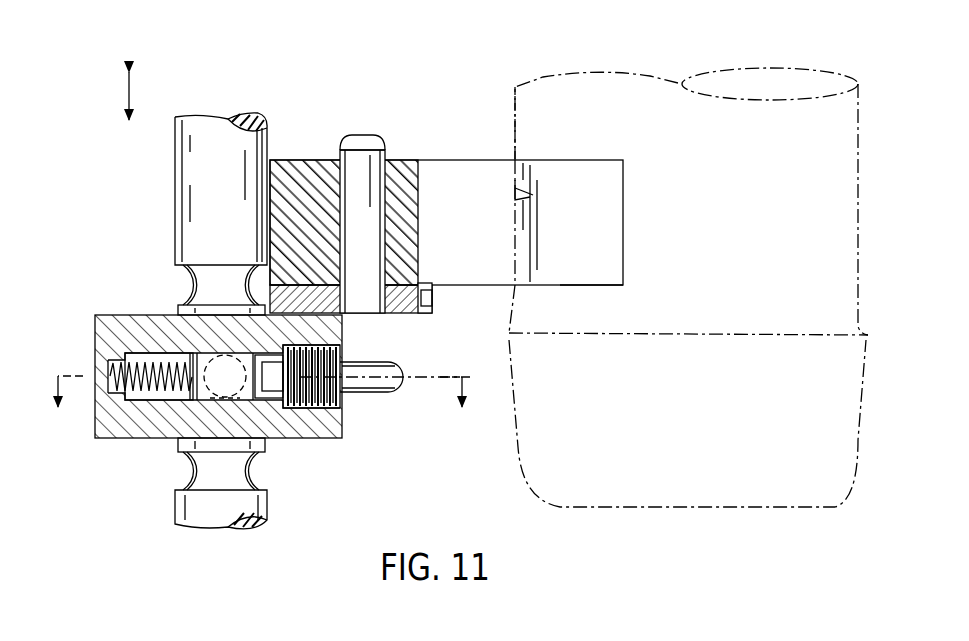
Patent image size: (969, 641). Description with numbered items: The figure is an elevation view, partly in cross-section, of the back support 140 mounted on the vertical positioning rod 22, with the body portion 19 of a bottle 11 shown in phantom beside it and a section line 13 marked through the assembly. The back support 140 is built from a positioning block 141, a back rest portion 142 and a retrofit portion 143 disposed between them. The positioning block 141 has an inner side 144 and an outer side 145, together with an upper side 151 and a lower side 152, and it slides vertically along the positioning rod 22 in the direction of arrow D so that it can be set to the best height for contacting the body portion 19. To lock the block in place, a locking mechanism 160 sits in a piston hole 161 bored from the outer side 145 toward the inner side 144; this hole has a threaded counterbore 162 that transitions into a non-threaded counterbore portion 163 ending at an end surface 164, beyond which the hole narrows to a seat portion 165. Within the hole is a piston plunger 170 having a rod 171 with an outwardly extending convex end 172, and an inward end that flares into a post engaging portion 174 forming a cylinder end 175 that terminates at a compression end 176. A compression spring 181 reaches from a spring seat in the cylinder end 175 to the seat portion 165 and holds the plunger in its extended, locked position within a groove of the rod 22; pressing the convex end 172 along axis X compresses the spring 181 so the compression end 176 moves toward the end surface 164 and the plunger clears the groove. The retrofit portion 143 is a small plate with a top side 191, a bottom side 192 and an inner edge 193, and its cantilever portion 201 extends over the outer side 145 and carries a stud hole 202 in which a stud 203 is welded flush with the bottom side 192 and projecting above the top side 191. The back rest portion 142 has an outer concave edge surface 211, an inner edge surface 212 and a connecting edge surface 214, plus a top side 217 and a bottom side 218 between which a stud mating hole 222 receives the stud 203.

The bottle 11 is at (645, 76).
The bottom ledge plate 13 is at (261, 415).
The body portion 19 is at (857, 168).
The vertical positioning rod 22 is at (172, 220).
The arrow D is at (123, 92).
The axis X is at (398, 392).
The back support 140 is at (130, 195).
The positioning block 141 is at (125, 446).
The back rest portion 142 is at (437, 158).
The retrofit portion 143 is at (432, 305).
The inner side 144 is at (112, 358).
The outer side 145 is at (343, 430).
The upper side 151 is at (115, 328).
The lower side 152 is at (143, 440).
The locking mechanism 160 is at (362, 363).
The piston hole 161 is at (133, 403).
The threaded counterbore 162 is at (312, 412).
The counterbore portion 163 is at (259, 402).
The end surface 164 is at (187, 363).
The seat portion 165 is at (110, 370).
The piston plunger 170 is at (386, 398).
The rod 171 is at (353, 392).
The convex end 172 is at (402, 374).
The post engaging portion 174 is at (213, 350).
The cylinder end 175 is at (228, 402).
The compression end 176 is at (187, 320).
The compression spring 181 is at (163, 395).
The top side 191 is at (416, 214).
The bottom side 192 is at (410, 316).
The inner edge 193 is at (248, 250).
The cantilever portion 201 is at (417, 282).
The stud hole 202 is at (347, 272).
The stud 203 is at (358, 145).
The outer concave edge surface 211 is at (533, 195).
The inner edge surface 212 is at (270, 177).
The edge surface 214 is at (603, 238).
The top side 217 is at (478, 160).
The bottom side 218 is at (608, 288).
The stud mating hole 222 is at (385, 175).